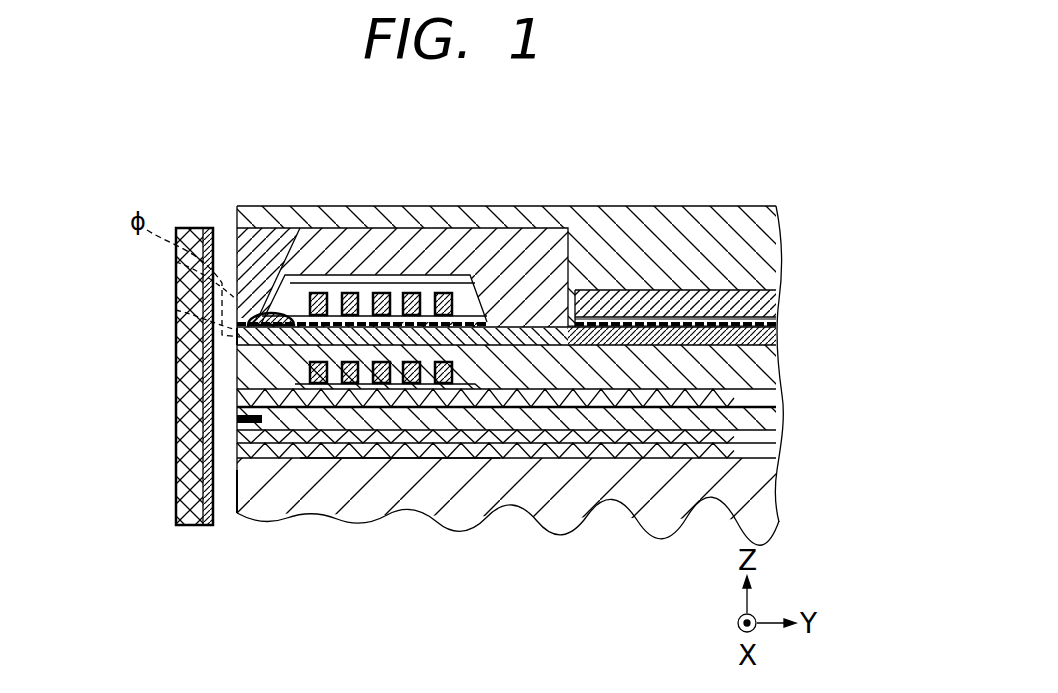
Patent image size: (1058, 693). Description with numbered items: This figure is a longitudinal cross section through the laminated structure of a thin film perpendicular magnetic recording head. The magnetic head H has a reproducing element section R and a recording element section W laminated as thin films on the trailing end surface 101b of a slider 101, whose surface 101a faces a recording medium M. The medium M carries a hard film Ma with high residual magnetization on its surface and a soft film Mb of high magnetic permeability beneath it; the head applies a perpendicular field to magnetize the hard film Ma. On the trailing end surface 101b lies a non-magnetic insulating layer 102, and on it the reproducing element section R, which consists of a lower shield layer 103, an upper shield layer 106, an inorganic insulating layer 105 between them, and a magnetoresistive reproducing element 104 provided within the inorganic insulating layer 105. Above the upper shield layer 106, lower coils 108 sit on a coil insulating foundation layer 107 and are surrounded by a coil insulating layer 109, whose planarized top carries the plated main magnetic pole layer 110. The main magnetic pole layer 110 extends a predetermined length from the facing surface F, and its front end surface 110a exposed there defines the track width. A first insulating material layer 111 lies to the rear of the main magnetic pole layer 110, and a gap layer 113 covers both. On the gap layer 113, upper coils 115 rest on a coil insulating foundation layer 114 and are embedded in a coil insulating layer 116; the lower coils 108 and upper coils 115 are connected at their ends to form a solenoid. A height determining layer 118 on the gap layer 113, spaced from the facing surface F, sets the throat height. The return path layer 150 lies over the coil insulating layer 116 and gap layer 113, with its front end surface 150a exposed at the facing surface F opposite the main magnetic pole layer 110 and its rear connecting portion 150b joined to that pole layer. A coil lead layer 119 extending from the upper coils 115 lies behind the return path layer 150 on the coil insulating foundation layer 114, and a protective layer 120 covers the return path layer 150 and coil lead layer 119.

The slider 101 is at (673, 503).
The surface of slider 101a is at (238, 490).
The trailing end surface 101b is at (399, 461).
The non-magnetic insulating layer 102 is at (237, 451).
The lower shield layer 103 is at (237, 437).
The reproducing element 104 is at (237, 423).
The inorganic insulating layer 105 is at (600, 418).
The upper shield layer 106 is at (237, 401).
The coil insulating foundation layer 107 is at (467, 392).
The lower coils 108 is at (383, 398).
The coil insulating layer 109 is at (237, 376).
The main magnetic pole layer 110 is at (242, 340).
The front end surface 110a is at (242, 330).
The first insulating material layer 111 is at (755, 325).
The gap layer 113 is at (240, 325).
The coil insulating foundation layer 114 is at (488, 318).
The upper coils 115 is at (383, 290).
The coil insulating layer 116 is at (313, 290).
The height determining layer 118 is at (262, 312).
The coil lead layer 119 is at (646, 300).
The protective layer 120 is at (338, 276).
The return path layer 150 is at (427, 268).
The front end surface 150a is at (237, 240).
The connecting portion 150b is at (523, 290).
The magnetic head H is at (143, 152).
The facing surface F is at (236, 297).
The recording medium M is at (164, 401).
The hard film Ma is at (207, 508).
The soft film Mb is at (190, 498).
The recording element section W is at (793, 222).
The reproducing element section R is at (793, 388).